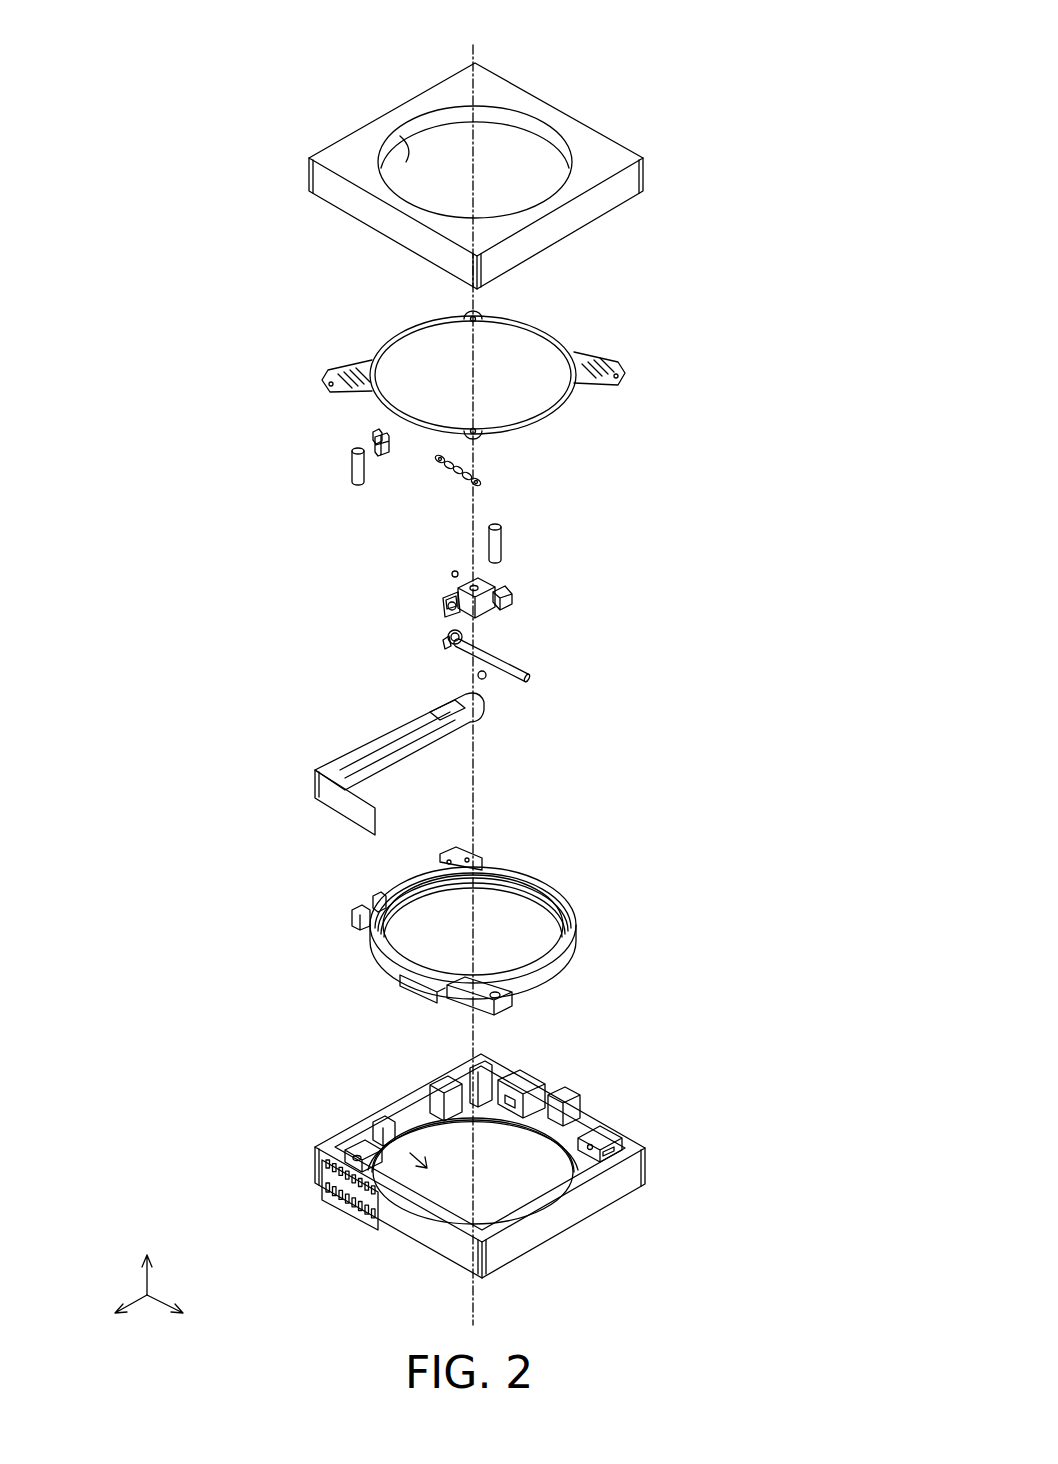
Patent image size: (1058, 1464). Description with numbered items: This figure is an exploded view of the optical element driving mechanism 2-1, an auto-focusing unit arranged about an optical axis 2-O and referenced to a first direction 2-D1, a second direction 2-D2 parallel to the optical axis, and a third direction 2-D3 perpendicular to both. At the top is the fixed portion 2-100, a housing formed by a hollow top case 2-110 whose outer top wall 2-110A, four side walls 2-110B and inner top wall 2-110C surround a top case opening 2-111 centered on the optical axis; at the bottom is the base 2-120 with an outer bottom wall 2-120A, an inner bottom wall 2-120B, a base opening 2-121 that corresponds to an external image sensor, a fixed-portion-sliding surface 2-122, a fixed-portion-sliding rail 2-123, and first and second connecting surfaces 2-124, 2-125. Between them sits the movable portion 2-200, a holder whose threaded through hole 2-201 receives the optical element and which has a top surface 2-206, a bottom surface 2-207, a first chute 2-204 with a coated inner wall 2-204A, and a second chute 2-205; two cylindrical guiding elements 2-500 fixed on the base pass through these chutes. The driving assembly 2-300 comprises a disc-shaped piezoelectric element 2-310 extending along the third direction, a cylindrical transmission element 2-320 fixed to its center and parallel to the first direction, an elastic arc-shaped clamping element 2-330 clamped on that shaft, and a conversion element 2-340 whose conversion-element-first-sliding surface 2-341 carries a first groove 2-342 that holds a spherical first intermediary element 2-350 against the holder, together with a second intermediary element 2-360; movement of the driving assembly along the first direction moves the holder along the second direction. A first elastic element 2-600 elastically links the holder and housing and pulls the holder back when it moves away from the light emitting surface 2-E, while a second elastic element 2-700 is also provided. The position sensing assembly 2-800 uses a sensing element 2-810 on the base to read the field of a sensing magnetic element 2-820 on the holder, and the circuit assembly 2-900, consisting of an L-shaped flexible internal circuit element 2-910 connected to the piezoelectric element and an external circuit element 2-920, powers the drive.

The optical element driving mechanism 2-1 is at (105, 58).
The optical axis 2-O is at (470, 667).
The fixed portion 2-100 is at (826, 536).
The top case 2-110 is at (497, 165).
The outer top wall 2-110A is at (582, 130).
The side walls 2-110B is at (612, 207).
The inner top wall 2-110C is at (401, 132).
The top case opening 2-111 is at (506, 134).
The base 2-120 is at (436, 1162).
The outer bottom wall 2-120A is at (558, 1237).
The inner bottom wall 2-120B is at (500, 1093).
The base opening 2-121 is at (410, 1153).
The fixed-portion-sliding surface 2-122 is at (430, 1088).
The fixed-portion-sliding rail 2-123 is at (510, 1072).
The first connecting surface 2-124 is at (470, 1066).
The second connecting surface 2-125 is at (555, 1092).
The movable portion 2-200 is at (455, 901).
The through hole 2-201 is at (495, 908).
The first chute 2-204 is at (514, 995).
The inner wall of the first chute 2-204A is at (500, 988).
The second chute 2-205 is at (373, 903).
The top surface 2-206 is at (360, 930).
The bottom surface 2-207 is at (377, 985).
The driving assembly 2-300 is at (826, 622).
The piezoelectric element 2-310 is at (446, 641).
The transmission element 2-320 is at (495, 660).
The clamping element 2-330 is at (500, 590).
The conversion element 2-340 is at (458, 590).
The conversion-element-first-sliding surface 2-341 is at (448, 612).
The first groove 2-342 is at (455, 601).
The first intermediary element 2-350 is at (451, 574).
The second intermediary element 2-360 is at (485, 679).
The guiding elements 2-500 is at (490, 532).
The first elastic element 2-600 is at (595, 366).
The second elastic element 2-700 is at (481, 476).
The position sensing assembly 2-800 is at (826, 845).
The sensing element 2-810 is at (373, 436).
The sensing magnetic element 2-820 is at (389, 453).
The circuit assembly 2-900 is at (826, 930).
The internal circuit element 2-910 is at (330, 806).
The external circuit element 2-920 is at (325, 1196).
The light emitting surface 2-E is at (418, 1247).
The first direction 2-D1 is at (198, 1314).
The second direction 2-D2 is at (144, 1258).
The third direction 2-D3 is at (97, 1314).